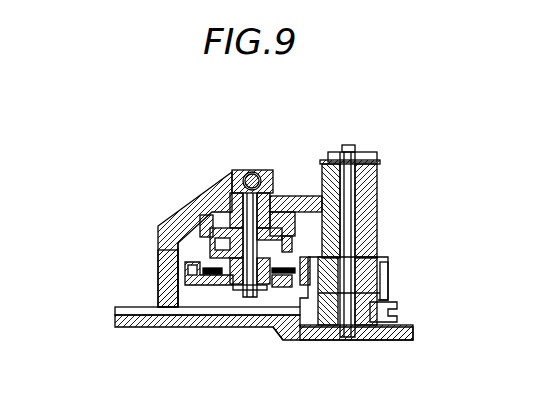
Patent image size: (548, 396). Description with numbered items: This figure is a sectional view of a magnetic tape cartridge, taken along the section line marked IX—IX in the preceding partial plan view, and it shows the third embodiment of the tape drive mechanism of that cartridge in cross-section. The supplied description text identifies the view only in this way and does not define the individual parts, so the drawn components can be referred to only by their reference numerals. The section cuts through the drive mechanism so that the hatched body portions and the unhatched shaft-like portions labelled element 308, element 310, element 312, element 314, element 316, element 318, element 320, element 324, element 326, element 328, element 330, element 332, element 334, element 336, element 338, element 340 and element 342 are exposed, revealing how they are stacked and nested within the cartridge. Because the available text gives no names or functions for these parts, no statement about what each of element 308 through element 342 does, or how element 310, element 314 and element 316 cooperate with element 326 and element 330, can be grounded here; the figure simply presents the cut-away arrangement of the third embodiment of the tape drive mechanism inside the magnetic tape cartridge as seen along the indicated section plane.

The frame base 308 is at (224, 293).
The adjustment assembly 310 is at (380, 158).
The cap 312 is at (378, 167).
The shaft 314 is at (346, 206).
The sleeve 316 is at (363, 181).
The plate 318 is at (293, 196).
The center rod 320 is at (246, 292).
The bracket 324 is at (388, 279).
The body 326 is at (380, 243).
The fastener 328 is at (392, 304).
The base plate 330 is at (130, 310).
The wall 332 is at (162, 226).
The housing 334 is at (202, 212).
The inner wall 336 is at (178, 252).
The bar 338 is at (278, 288).
The bar 340 is at (205, 275).
The bracket 342 is at (186, 262).